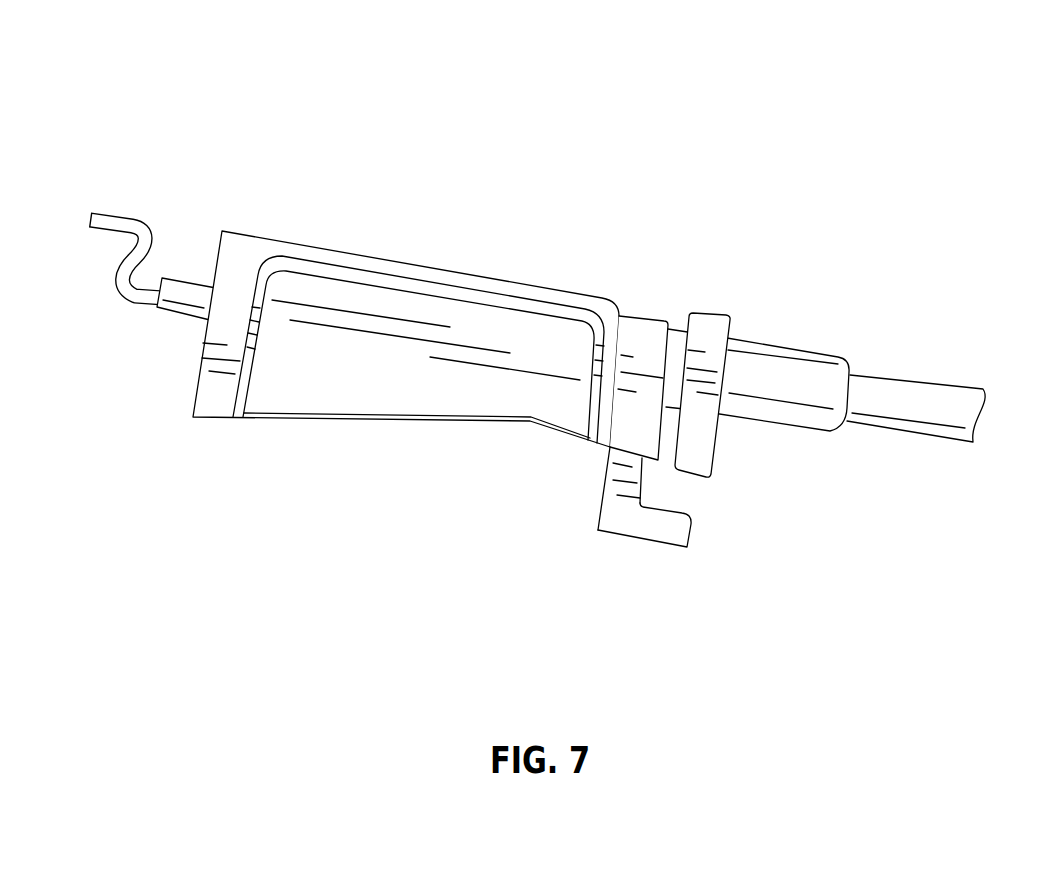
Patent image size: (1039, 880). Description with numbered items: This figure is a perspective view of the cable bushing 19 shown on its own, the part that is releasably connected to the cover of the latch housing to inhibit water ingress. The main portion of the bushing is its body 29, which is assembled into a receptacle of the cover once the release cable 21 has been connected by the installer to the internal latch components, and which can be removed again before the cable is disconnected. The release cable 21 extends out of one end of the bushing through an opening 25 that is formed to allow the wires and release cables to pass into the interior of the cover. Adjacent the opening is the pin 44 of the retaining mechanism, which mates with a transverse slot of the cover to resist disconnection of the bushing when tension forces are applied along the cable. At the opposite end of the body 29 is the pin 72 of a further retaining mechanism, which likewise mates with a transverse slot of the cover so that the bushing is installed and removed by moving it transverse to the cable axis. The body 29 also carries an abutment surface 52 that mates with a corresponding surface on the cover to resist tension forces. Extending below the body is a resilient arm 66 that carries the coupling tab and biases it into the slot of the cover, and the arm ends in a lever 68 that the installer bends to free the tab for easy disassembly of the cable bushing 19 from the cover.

The cable bushing 19 is at (493, 167).
The pin 72 is at (237, 262).
The body 29 is at (323, 385).
The abutment surface 52 is at (613, 400).
The pin 44 is at (710, 323).
The opening 25 is at (848, 357).
The release cable 21 is at (923, 378).
The resilient arm 66 is at (612, 487).
The lever 68 is at (675, 532).